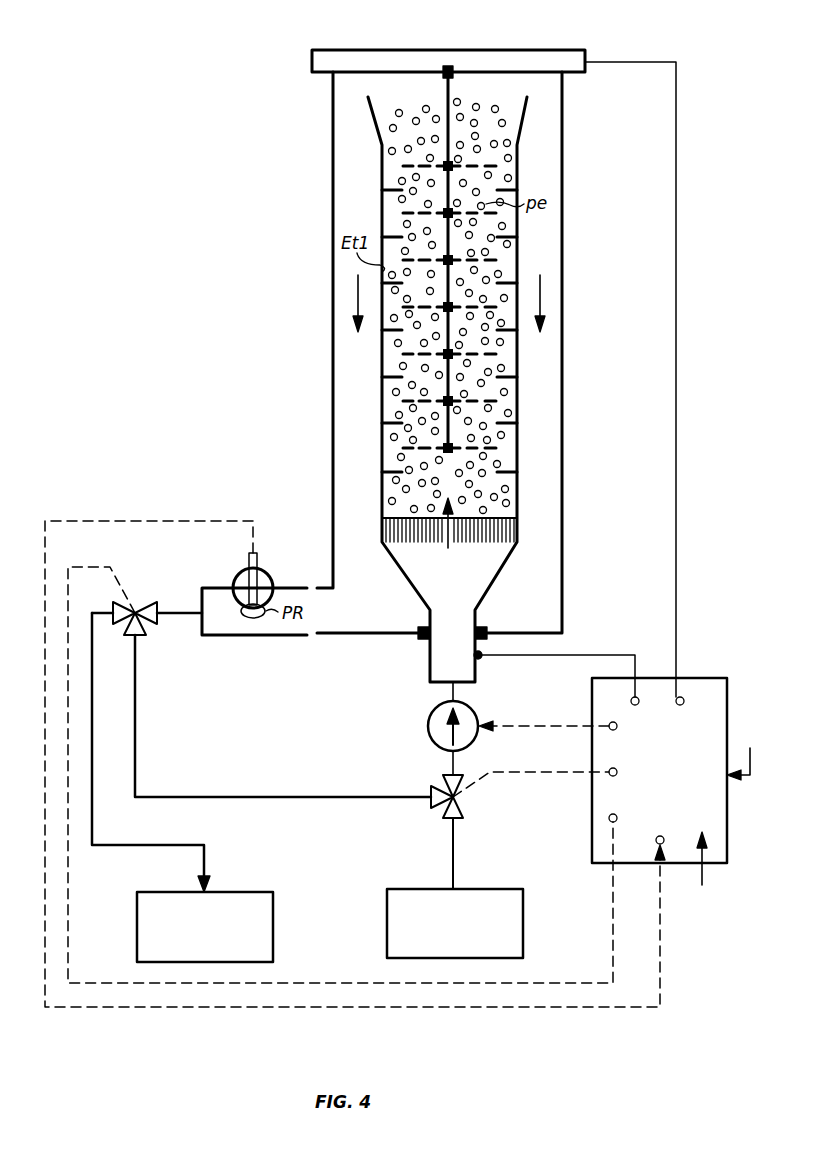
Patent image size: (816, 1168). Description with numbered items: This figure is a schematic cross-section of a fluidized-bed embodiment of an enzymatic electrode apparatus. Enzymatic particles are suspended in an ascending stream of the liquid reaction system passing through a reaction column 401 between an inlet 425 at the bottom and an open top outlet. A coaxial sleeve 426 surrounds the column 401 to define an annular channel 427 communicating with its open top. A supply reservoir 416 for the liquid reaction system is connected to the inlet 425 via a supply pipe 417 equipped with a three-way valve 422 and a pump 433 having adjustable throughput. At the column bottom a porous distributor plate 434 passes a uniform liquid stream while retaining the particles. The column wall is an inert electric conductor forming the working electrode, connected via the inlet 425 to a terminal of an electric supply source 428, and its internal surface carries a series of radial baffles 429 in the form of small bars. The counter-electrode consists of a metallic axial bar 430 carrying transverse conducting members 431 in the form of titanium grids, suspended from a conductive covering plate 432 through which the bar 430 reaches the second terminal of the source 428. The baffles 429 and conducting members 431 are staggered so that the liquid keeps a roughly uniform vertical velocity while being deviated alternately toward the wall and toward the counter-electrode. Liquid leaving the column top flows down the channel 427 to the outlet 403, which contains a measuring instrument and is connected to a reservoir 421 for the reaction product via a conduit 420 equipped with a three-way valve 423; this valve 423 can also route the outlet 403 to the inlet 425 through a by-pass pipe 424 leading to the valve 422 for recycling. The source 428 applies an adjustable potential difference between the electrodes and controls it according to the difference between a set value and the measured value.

The reaction column 401 is at (366, 408).
The outlet 403 is at (265, 637).
The supply reservoir 416 is at (525, 924).
The supply pipe 417 is at (453, 843).
The conduit 420 is at (92, 676).
The reservoir for the reaction product 421 is at (275, 925).
The three-way valve 422 is at (462, 800).
The three-way valve 423 is at (143, 606).
The by-pass pipe 424 is at (137, 739).
The inlet 425 is at (430, 663).
The coaxial sleeve 426 is at (333, 279).
The annular channel 427 is at (333, 208).
The electric supply source 428 is at (591, 838).
The radial baffles 429 is at (388, 190).
The metallic axial bar 430 is at (455, 104).
The transverse conducting members 431 is at (422, 164).
The conductive covering plate 432 is at (483, 50).
The pump 433 is at (428, 725).
The porous distributor plate 434 is at (484, 544).